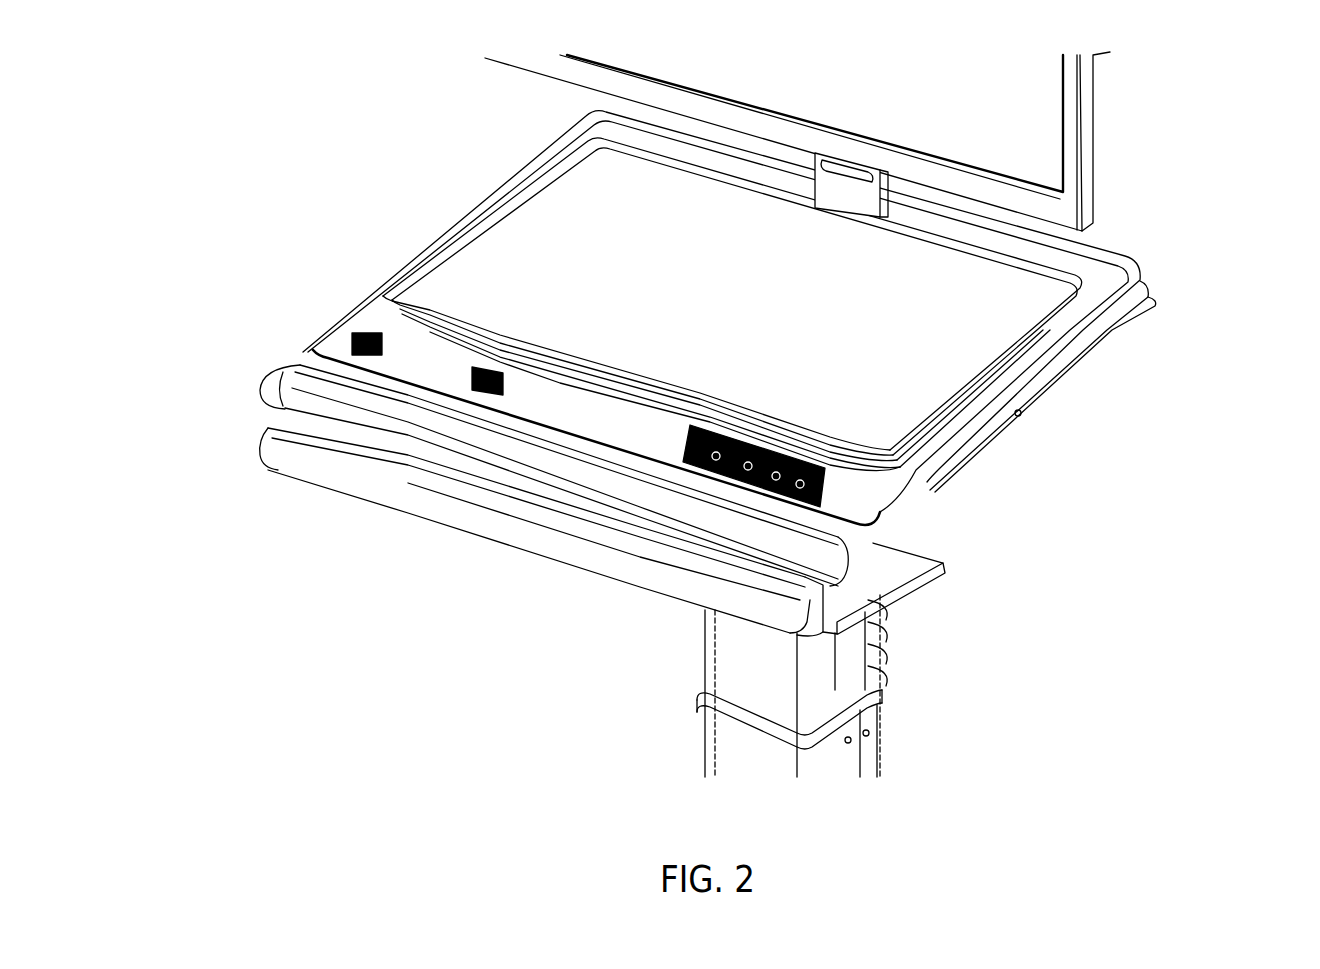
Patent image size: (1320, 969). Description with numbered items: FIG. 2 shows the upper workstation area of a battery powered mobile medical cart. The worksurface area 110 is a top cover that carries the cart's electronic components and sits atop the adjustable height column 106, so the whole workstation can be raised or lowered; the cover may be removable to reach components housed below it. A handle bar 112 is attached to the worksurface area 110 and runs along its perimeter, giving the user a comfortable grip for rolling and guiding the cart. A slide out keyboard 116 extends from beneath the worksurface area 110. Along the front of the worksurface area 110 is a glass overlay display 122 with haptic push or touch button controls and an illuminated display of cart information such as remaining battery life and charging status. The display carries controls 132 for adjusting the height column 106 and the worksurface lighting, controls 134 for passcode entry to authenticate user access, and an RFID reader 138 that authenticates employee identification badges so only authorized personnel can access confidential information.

The adjustable height column 106 is at (718, 750).
The worksurface area 110 is at (1095, 325).
The handle bar 112 is at (275, 405).
The slide out keyboard 116 is at (867, 582).
The glass overlay display 122 is at (593, 443).
The controls 132 is at (827, 483).
The controls 134 is at (480, 390).
The RFID reader 138 is at (357, 343).